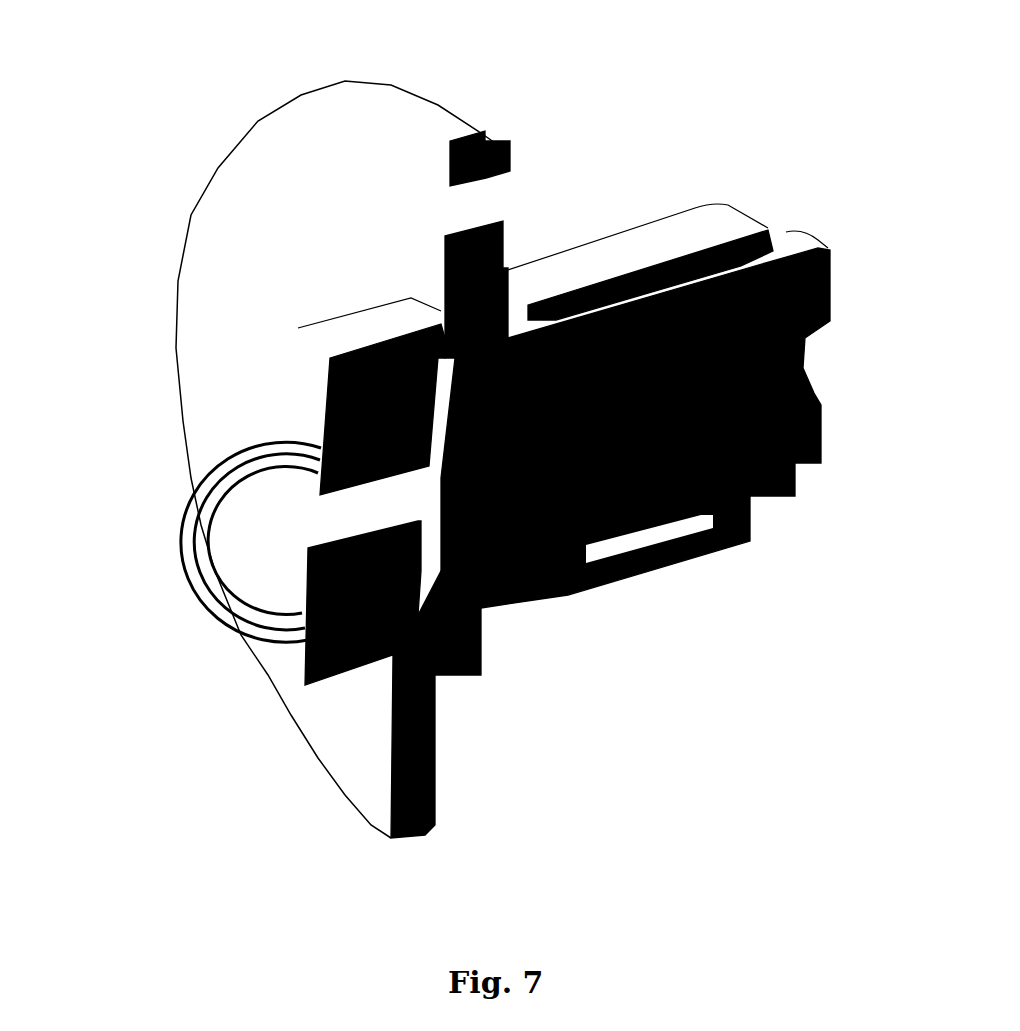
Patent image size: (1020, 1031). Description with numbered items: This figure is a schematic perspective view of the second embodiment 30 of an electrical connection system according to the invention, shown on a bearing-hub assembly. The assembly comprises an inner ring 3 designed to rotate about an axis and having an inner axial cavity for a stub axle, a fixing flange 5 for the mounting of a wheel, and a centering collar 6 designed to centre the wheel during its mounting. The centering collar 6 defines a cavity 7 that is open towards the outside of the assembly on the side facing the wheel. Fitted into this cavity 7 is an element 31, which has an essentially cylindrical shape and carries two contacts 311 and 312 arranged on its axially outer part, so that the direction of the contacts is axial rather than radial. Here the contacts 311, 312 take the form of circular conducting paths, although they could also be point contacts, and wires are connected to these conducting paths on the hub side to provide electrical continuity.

The inner ring 3 is at (645, 345).
The fixing flange 5 is at (295, 128).
The centering collar 6 is at (303, 348).
The cavity 7 is at (315, 522).
The second embodiment 30 is at (178, 415).
The element 31 is at (245, 373).
The contact 311 is at (250, 548).
The contact 312 is at (255, 478).